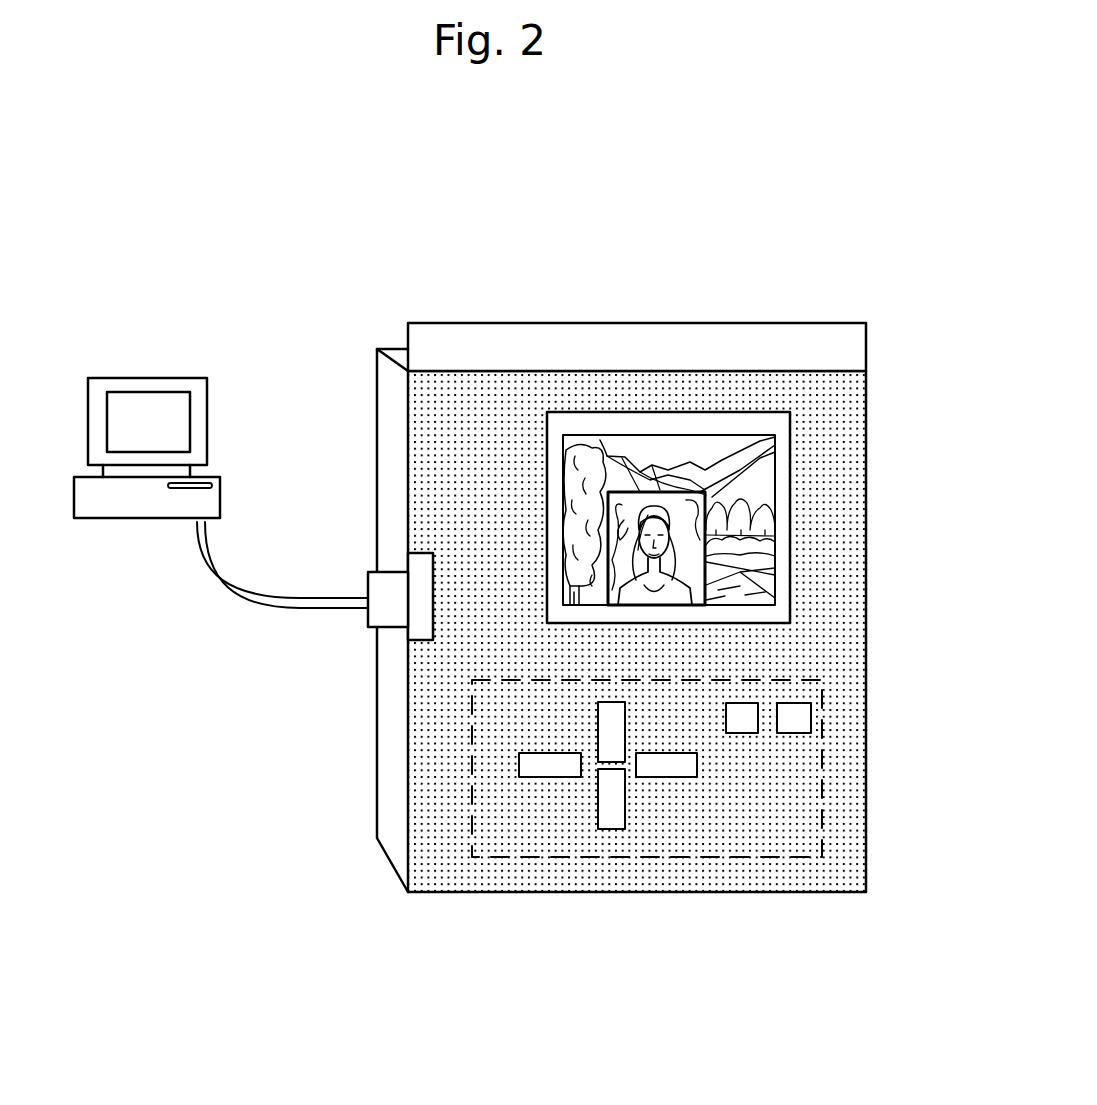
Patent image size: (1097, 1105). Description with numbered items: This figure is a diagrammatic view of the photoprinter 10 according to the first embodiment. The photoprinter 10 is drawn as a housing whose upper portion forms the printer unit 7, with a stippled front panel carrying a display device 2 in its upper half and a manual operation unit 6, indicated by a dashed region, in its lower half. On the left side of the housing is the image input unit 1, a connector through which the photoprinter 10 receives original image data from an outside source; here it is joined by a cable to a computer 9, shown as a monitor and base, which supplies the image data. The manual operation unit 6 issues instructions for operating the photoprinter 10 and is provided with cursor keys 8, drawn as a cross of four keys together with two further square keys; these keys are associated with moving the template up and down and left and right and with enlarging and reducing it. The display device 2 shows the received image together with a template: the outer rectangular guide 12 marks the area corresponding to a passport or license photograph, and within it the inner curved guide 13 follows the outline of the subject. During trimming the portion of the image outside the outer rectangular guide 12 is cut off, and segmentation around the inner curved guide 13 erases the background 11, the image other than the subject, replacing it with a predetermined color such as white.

The image input unit 1 is at (368, 627).
The display device 2 is at (781, 428).
The manual operation unit 6 is at (822, 736).
The printer unit 7 is at (778, 323).
The cursor keys 8 is at (612, 830).
The computer 9 is at (128, 518).
The photoprinter 10 is at (838, 878).
The background 11 is at (640, 492).
The outer rectangular guide 12 is at (705, 537).
The inner curved guide 13 is at (688, 604).